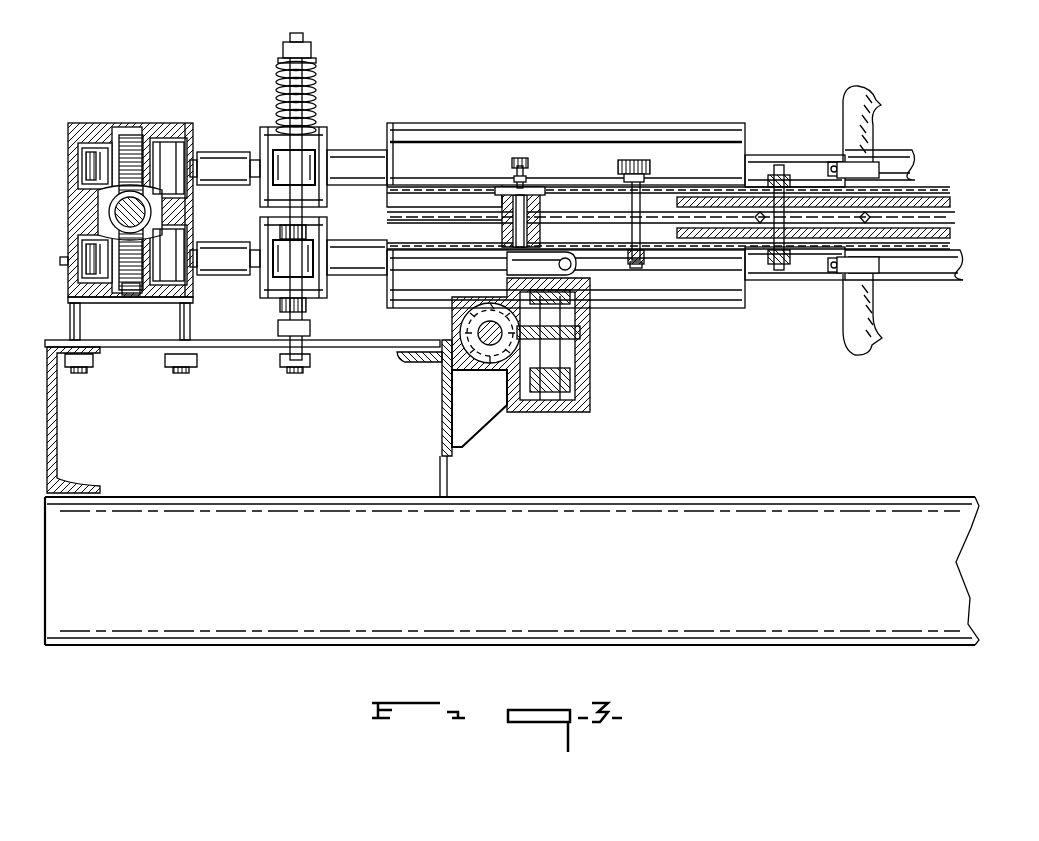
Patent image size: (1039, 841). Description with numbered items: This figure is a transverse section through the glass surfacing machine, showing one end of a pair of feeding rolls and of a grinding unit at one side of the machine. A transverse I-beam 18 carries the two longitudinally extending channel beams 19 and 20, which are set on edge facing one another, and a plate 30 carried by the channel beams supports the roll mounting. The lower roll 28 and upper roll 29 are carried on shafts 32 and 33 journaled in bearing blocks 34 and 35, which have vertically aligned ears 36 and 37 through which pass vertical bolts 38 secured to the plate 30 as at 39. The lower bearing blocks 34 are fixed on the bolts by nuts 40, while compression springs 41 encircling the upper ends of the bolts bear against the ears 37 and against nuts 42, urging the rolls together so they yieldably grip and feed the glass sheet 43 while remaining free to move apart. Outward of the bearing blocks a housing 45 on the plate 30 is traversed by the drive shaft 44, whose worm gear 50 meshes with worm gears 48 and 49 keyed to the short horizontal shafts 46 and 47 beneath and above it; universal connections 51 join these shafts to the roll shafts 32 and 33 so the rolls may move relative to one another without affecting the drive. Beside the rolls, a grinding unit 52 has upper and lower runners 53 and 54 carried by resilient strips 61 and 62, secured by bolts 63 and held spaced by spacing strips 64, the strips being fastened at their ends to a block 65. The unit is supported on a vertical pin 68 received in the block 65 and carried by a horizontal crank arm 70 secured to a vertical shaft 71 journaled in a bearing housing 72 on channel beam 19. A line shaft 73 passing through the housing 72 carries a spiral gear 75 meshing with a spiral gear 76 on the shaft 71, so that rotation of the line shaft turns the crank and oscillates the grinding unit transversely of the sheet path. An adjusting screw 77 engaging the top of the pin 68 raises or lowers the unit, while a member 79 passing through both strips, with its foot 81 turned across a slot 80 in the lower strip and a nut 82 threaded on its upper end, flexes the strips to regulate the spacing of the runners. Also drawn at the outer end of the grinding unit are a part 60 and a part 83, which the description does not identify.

The transverse I-beam 18 is at (720, 523).
The channel beam 19 is at (442, 423).
The channel beam 20 is at (62, 418).
The lower roll 28 is at (688, 290).
The upper roll 29 is at (588, 140).
The plate 30 is at (332, 343).
The shaft 32 is at (348, 265).
The shaft 33 is at (352, 163).
The bearing block 34 is at (262, 275).
The bearing block 35 is at (262, 135).
The ear 36 is at (307, 250).
The ear 37 is at (297, 165).
The vertical bolt 38 is at (290, 213).
The bolt securing point 39 is at (277, 355).
The nut 40 is at (307, 230).
The compression spring 41 is at (282, 80).
The nut 42 is at (310, 54).
The glass sheet 43 is at (952, 227).
The drive shaft 44 is at (113, 212).
The housing 45 is at (70, 135).
The horizontal shaft 46 is at (82, 286).
The horizontal shaft 47 is at (112, 165).
The worm gear 48 is at (133, 290).
The worm gear 49 is at (137, 143).
The worm gear 50 is at (113, 205).
The universal connection 51 is at (208, 253).
The grinding unit 52 is at (953, 210).
The upper runner 53 is at (925, 195).
The lower runner 54 is at (905, 248).
The handle 60 is at (882, 107).
The resilient strip 61 is at (762, 185).
The resilient strip 62 is at (800, 250).
The bolt 63 is at (795, 178).
The spacing strip 64 is at (765, 240).
The block 65 is at (502, 207).
The vertical pin 68 is at (520, 223).
The crank arm 70 is at (507, 262).
The vertical shaft 71 is at (574, 273).
The bearing housing 72 is at (592, 395).
The line shaft 73 is at (442, 370).
The spiral gear 75 is at (468, 330).
The spiral gear 76 is at (587, 335).
The adjusting screw 77 is at (527, 163).
The member 79 is at (645, 208).
The slot 80 is at (627, 262).
The foot 81 is at (641, 254).
The nut 82 is at (648, 160).
The extension tube 83 is at (748, 146).